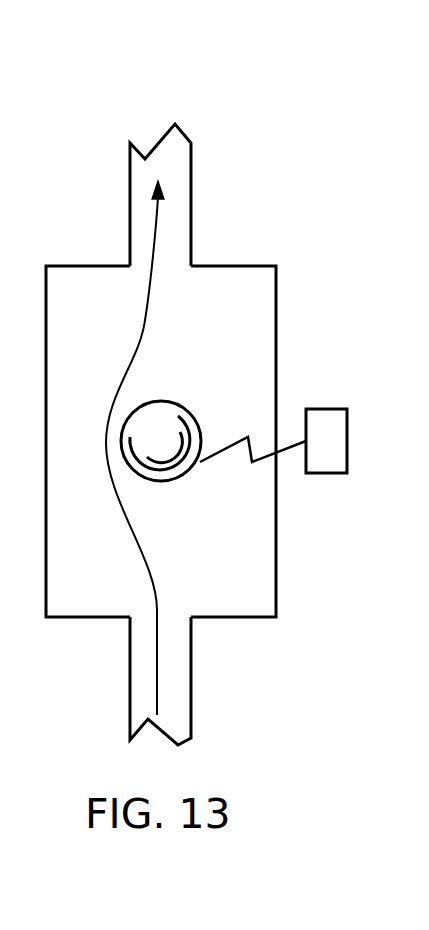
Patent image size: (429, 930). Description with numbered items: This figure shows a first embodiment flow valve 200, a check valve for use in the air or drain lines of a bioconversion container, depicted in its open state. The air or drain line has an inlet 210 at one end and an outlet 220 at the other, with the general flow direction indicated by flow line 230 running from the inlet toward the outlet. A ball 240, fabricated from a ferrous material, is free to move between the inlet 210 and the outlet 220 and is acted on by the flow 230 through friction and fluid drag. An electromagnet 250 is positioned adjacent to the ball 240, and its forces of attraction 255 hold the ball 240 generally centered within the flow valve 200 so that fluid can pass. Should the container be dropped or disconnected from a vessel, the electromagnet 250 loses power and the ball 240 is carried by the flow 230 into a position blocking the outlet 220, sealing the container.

The flow valve 200 is at (224, 172).
The inlet 210 is at (130, 677).
The outlet 220 is at (130, 228).
The flow line 230 is at (143, 328).
The ball 240 is at (183, 406).
The electromagnet 250 is at (327, 413).
The forces of attraction 255 is at (283, 453).